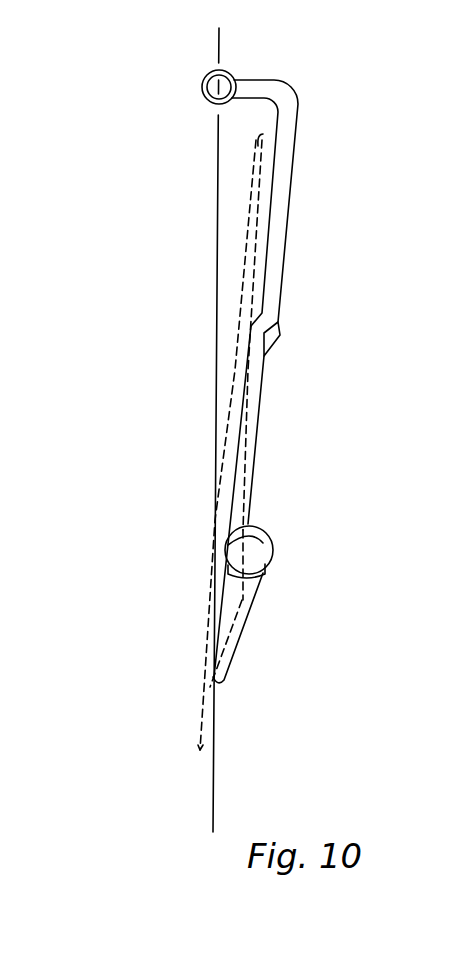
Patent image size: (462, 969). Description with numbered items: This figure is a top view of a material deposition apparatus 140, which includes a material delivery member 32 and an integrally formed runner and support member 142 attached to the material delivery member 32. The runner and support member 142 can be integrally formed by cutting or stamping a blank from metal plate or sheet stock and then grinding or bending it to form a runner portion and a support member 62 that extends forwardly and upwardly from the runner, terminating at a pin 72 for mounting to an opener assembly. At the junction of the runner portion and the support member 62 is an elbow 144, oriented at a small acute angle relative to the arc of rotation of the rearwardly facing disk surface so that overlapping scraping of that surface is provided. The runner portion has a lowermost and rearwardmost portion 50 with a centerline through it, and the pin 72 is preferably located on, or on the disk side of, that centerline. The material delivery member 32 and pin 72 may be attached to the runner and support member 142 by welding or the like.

The pin 72 is at (203, 85).
The support member 62 is at (289, 230).
The elbow 144 is at (280, 335).
The runner and support member 142 is at (253, 462).
The material delivery member 32 is at (273, 560).
The material deposition apparatus 140 is at (227, 703).
The lowermost and rearwardmost portion 50 is at (235, 628).